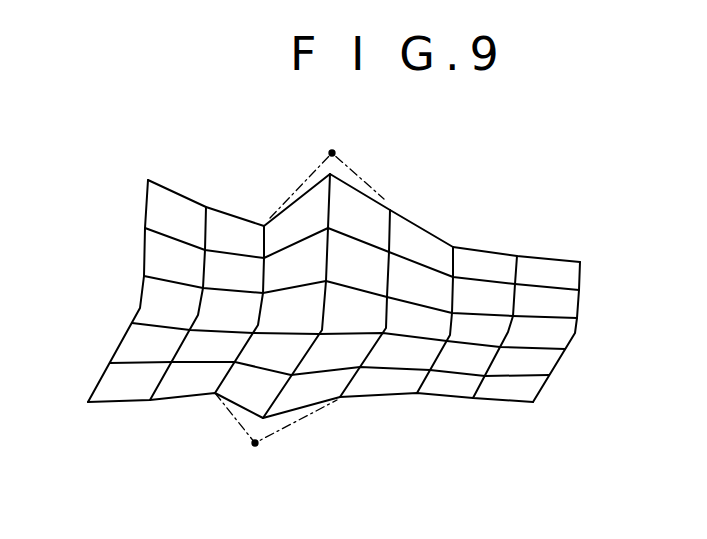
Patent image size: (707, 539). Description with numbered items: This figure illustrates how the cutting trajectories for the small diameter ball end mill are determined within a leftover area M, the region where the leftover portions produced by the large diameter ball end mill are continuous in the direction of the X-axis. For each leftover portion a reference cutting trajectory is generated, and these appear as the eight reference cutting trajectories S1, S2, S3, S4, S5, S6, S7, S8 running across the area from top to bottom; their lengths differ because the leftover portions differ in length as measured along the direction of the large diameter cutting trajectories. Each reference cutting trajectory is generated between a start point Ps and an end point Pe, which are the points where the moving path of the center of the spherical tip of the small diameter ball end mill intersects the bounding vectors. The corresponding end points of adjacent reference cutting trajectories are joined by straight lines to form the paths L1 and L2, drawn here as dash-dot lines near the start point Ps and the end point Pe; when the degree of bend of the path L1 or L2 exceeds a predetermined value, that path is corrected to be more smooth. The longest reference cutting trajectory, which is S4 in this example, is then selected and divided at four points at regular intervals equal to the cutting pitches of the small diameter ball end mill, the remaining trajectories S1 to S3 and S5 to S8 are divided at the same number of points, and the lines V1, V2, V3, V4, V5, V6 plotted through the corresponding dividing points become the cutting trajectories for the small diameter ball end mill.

The leftover area M is at (489, 212).
The cutting trajectory line V1 is at (553, 258).
The cutting trajectory line V2 is at (553, 288).
The cutting trajectory line V3 is at (553, 319).
The cutting trajectory line V4 is at (548, 349).
The cutting trajectory line V5 is at (537, 376).
The cutting trajectory line V6 is at (522, 402).
The reference cutting trajectory S1 is at (96, 391).
The reference cutting trajectory S2 is at (158, 387).
The reference cutting trajectory S3 is at (220, 386).
The reference cutting trajectory S4 is at (274, 400).
The reference cutting trajectory S5 is at (349, 384).
The reference cutting trajectory S6 is at (423, 381).
The reference cutting trajectory S7 is at (478, 388).
The reference cutting trajectory S8 is at (540, 389).
The start point Ps is at (334, 136).
The end point Pe is at (253, 459).
The path L1 is at (305, 184).
The path L2 is at (237, 423).